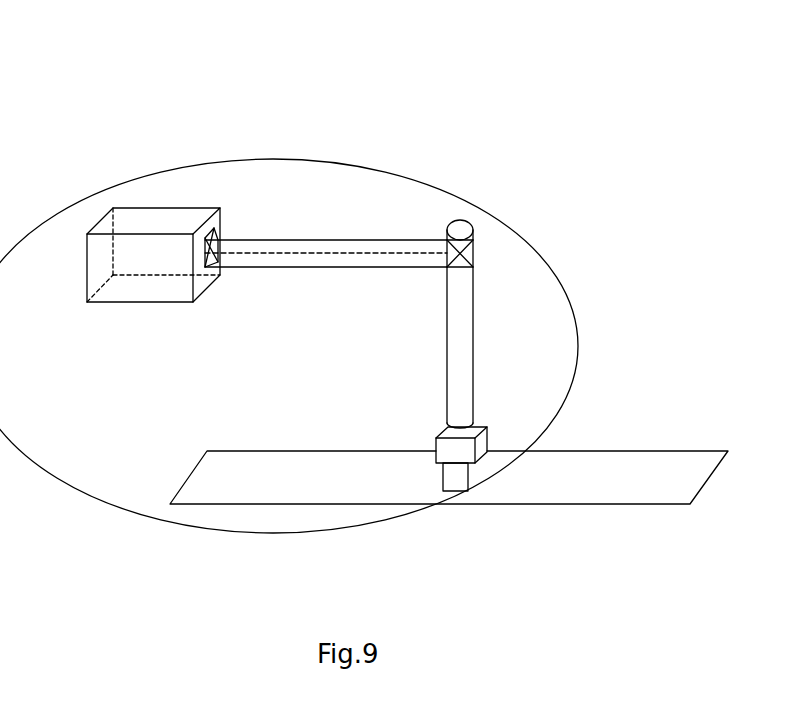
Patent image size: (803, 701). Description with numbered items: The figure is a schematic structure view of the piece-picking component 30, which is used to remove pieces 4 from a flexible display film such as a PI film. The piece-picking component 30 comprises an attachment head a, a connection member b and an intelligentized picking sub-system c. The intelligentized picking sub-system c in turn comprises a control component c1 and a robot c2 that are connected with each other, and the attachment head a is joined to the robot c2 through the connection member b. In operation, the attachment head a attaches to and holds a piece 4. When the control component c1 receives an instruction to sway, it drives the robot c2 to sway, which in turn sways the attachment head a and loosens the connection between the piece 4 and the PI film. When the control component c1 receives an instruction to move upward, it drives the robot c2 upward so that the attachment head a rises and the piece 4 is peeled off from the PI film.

The piece-picking component 30 is at (492, 214).
The pieces 4 is at (600, 486).
The intelligentized picking sub-system c is at (366, 256).
The control component c1 is at (155, 207).
The robot c2 is at (458, 322).
The connection member b is at (466, 452).
The attachment head a is at (455, 480).